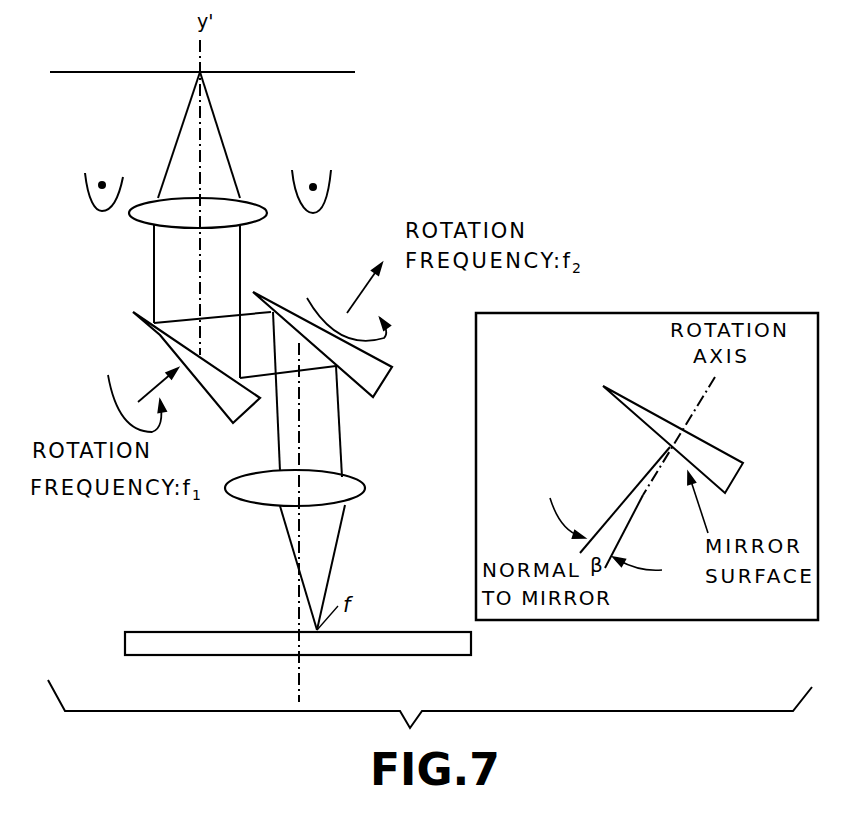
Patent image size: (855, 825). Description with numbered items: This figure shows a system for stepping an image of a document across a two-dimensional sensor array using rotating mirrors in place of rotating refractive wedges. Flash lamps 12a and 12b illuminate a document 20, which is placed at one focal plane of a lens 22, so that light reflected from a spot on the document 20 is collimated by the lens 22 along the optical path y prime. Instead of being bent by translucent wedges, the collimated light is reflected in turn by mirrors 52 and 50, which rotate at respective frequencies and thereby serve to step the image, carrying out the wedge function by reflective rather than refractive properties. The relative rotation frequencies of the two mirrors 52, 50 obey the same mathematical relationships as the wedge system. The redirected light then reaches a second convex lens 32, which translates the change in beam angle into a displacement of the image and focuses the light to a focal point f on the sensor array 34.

The document 20 is at (310, 72).
The lens 22 is at (243, 200).
The flash lamp 12a is at (87, 207).
The flash lamp 12b is at (327, 205).
The mirror 52 is at (220, 413).
The mirror 50 is at (385, 389).
The convex lens 32 is at (358, 481).
The sensor array 34 is at (378, 629).